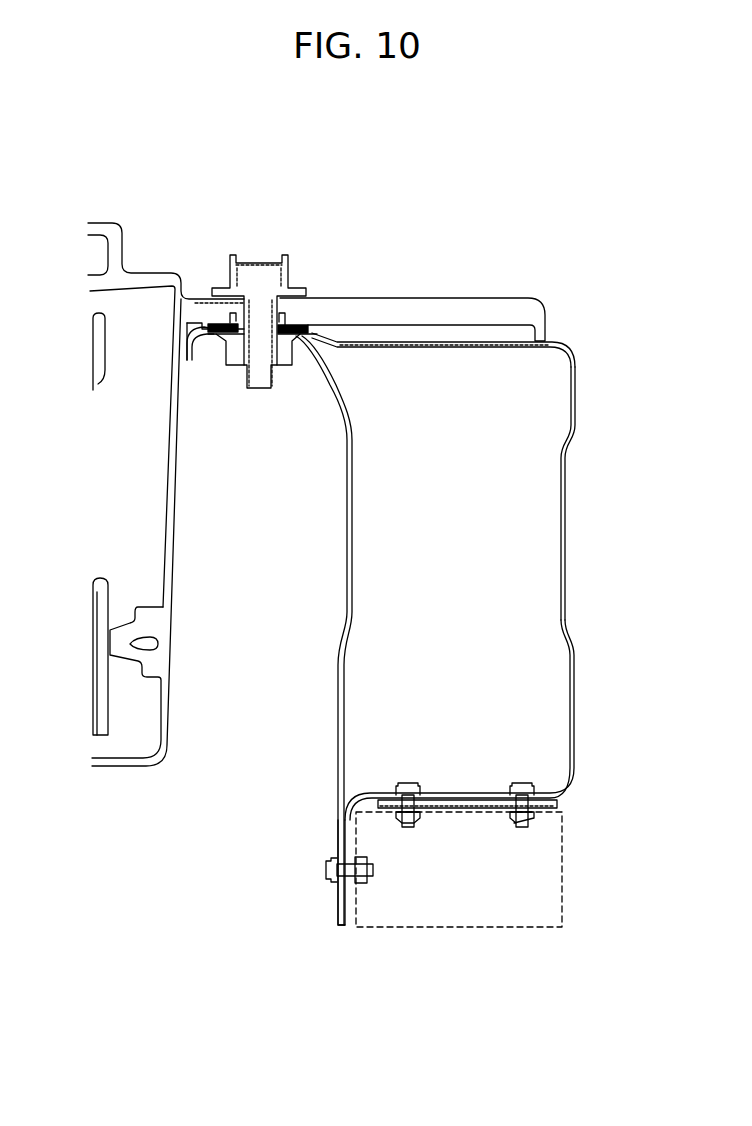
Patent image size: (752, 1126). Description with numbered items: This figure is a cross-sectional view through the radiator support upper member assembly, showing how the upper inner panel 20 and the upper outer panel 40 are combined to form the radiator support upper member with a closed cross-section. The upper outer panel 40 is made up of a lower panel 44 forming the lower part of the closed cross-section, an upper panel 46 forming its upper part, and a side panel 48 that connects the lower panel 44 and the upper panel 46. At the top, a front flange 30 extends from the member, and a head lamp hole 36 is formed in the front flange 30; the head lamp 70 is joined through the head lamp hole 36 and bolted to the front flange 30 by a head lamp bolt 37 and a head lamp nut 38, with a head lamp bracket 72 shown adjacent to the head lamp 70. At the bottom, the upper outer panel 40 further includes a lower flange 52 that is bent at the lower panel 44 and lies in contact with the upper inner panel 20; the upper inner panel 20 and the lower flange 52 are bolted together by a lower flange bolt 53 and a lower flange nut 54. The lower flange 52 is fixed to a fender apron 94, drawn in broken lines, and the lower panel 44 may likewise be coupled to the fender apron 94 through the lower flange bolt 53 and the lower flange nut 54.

The upper inner panel 20 is at (344, 563).
The front flange 30 is at (207, 357).
The head lamp hole 36 is at (284, 310).
The head lamp bolt 37 is at (263, 257).
The head lamp nut 38 is at (289, 367).
The upper outer panel 40 is at (569, 543).
The lower panel 44 is at (470, 796).
The upper panel 46 is at (438, 348).
The side panel 48 is at (576, 671).
The lower flange 52 is at (350, 842).
The lower flange bolt 53 is at (533, 784).
The lower flange nut 54 is at (368, 880).
The head lamp 70 is at (146, 257).
The head lamp bracket 72 is at (426, 298).
The fender apron 94 is at (565, 870).